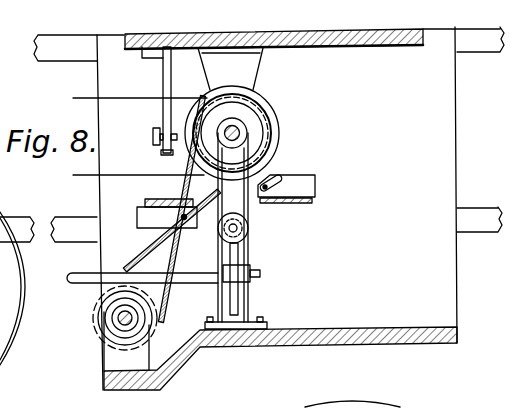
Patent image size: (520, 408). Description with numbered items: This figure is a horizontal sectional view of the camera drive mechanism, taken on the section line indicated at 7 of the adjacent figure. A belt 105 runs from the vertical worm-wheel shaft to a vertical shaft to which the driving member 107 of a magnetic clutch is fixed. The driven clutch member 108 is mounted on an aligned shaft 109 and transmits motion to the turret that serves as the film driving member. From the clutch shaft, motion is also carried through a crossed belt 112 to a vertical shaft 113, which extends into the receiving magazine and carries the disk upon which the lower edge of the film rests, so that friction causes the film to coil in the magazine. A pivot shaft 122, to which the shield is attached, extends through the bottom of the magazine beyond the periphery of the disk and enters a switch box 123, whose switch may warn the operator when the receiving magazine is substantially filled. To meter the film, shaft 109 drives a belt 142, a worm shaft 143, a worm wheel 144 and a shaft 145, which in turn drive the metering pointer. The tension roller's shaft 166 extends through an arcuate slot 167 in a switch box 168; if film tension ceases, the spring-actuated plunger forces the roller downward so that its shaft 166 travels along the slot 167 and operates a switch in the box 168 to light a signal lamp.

The section line of Figure 7 is at (39, 287).
The belt 105 is at (102, 99).
The driving member of magnetic clutch 107 is at (270, 101).
The driven clutch member 108 is at (258, 135).
The shaft 109 is at (240, 129).
The crossed belt 112 is at (150, 243).
The vertical shaft 113 is at (122, 322).
The pivot shaft 122 is at (186, 220).
The switch box 123 is at (150, 216).
The belt 142 is at (258, 161).
The worm shaft 143 is at (248, 229).
The worm wheel 144 is at (236, 300).
The shaft 145 is at (82, 274).
The roller shaft 166 is at (278, 181).
The arcuate slot 167 is at (283, 201).
The switch box 168 is at (306, 190).